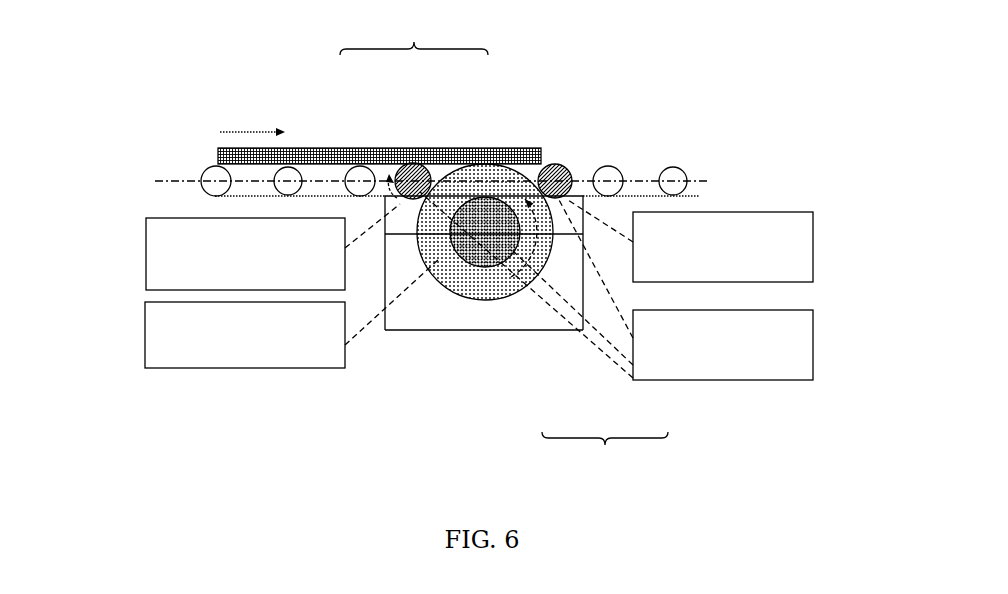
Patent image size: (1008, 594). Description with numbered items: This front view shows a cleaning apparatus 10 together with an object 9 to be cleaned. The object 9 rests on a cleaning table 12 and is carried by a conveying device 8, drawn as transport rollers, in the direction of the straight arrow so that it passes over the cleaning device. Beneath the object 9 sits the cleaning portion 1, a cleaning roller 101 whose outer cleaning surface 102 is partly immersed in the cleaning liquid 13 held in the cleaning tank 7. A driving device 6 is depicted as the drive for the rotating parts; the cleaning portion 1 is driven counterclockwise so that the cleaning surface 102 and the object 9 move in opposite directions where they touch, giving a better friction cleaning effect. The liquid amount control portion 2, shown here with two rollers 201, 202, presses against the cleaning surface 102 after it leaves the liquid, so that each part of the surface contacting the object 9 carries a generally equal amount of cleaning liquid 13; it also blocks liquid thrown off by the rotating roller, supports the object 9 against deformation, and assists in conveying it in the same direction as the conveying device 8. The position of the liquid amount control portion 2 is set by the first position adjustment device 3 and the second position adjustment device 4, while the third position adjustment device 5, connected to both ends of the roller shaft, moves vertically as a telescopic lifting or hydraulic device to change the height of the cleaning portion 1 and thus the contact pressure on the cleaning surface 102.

The bending machine 10 is at (56, 16).
The object to be cleaned 9 is at (218, 148).
The cleaning table 12 is at (333, 196).
The conveying device 8 is at (673, 181).
The liquid amount control portion 2 is at (451, 108).
The first clamping roller 201 is at (412, 168).
The second clamping roller 202 is at (535, 150).
The first position adjustment device 3 is at (146, 262).
The third position adjustment device 5 is at (144, 345).
The second position adjustment device 4 is at (813, 248).
The driving device 6 is at (813, 353).
The cleaning liquid 13 is at (428, 312).
The cleaning tank 7 is at (438, 333).
The cleaning portion 1 is at (542, 321).
The outer rotating wheel 101 is at (432, 190).
The cleaning surface 102 is at (522, 245).